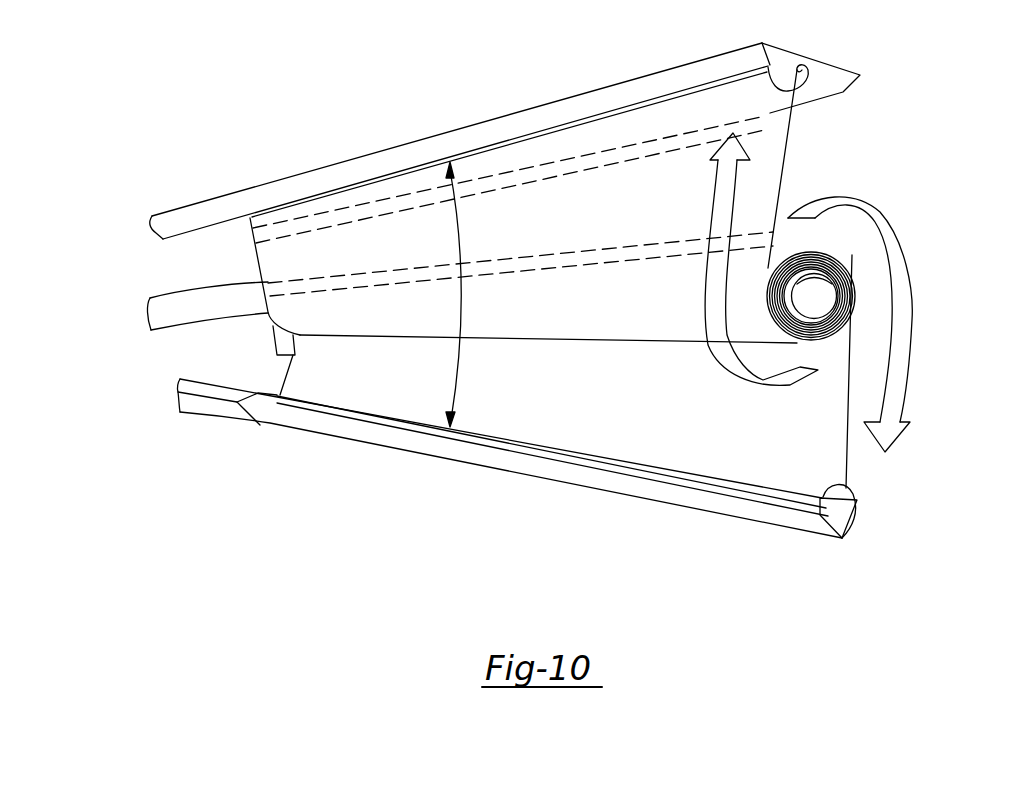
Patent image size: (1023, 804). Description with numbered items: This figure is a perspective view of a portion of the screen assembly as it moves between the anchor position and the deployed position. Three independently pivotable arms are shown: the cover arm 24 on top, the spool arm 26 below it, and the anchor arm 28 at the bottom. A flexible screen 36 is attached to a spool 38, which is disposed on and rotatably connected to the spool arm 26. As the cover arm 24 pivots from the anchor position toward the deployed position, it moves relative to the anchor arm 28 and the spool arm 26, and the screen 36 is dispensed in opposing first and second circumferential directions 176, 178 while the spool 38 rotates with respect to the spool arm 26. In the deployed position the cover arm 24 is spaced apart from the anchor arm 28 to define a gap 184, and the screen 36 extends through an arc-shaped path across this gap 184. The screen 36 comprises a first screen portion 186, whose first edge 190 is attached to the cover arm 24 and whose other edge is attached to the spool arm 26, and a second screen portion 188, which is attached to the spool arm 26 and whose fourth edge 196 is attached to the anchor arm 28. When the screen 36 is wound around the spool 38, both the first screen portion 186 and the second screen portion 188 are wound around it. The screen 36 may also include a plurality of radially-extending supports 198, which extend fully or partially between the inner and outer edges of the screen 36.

The cover arm 24 is at (408, 152).
The spool arm 26 is at (172, 305).
The anchor arm 28 is at (462, 452).
The flexible screen 36 is at (533, 210).
The spool 38 is at (853, 288).
The first circumferential direction 176 is at (716, 216).
The second circumferential direction 178 is at (893, 368).
The gap 184 is at (463, 368).
The first screen portion 186 is at (770, 165).
The second screen portion 188 is at (823, 472).
The first edge 190 is at (803, 69).
The fourth edge 196 is at (857, 500).
The radially-extending supports 198 is at (575, 173).